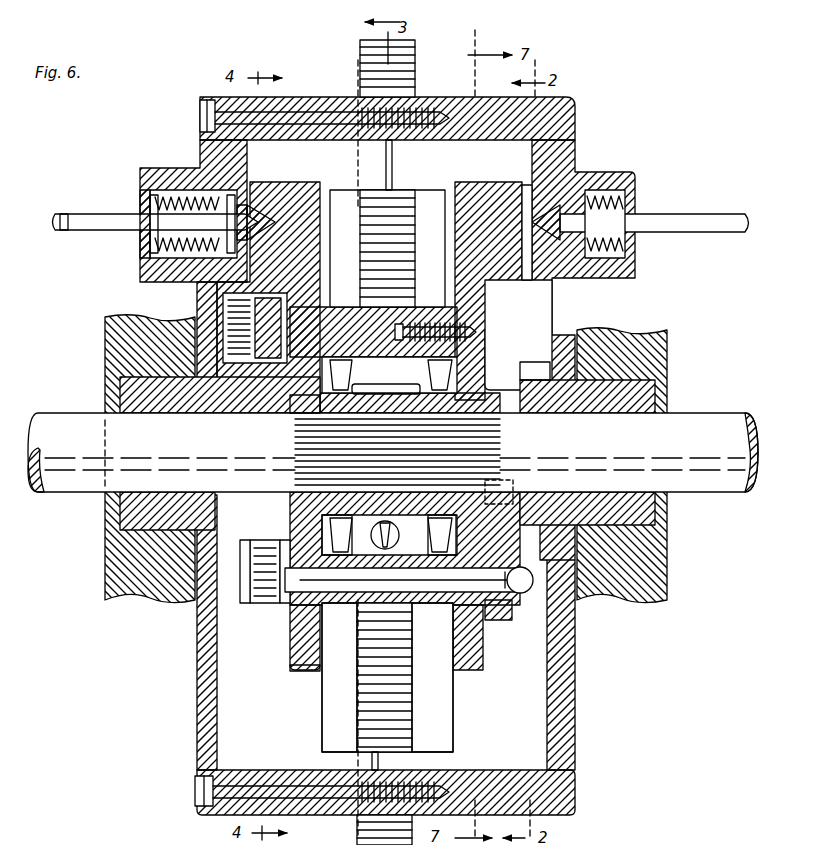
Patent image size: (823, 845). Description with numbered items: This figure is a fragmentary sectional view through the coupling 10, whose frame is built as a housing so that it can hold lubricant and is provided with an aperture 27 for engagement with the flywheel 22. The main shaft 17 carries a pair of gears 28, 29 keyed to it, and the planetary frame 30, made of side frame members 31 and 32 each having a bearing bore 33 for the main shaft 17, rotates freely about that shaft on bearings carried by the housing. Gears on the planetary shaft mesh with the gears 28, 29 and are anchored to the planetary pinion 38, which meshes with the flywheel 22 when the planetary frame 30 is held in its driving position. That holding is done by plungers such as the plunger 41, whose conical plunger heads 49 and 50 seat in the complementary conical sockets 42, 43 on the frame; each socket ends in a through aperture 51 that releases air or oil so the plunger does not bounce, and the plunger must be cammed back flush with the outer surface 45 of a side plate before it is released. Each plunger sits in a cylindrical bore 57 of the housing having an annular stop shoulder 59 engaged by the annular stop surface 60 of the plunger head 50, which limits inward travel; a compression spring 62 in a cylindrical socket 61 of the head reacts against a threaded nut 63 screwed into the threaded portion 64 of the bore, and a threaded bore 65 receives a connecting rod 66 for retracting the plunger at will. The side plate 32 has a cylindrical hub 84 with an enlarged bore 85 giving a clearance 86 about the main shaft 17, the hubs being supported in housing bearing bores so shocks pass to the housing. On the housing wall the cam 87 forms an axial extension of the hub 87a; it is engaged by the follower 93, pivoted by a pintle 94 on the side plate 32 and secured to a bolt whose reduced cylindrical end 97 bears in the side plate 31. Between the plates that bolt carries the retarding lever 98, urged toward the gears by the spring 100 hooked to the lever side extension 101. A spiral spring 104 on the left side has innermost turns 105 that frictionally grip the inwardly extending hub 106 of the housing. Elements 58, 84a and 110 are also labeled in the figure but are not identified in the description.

The coupling 10 is at (682, 393).
The main shaft 17 is at (710, 490).
The flywheel 22 is at (356, 830).
The aperture 27 is at (430, 705).
The gear 28 is at (333, 523).
The gear 29 is at (440, 533).
The planetary frame 30 is at (287, 657).
The side frame member 31 is at (300, 672).
The side frame member 32 is at (480, 667).
The bearing bore 33 is at (307, 414).
The planetary pinion 38 is at (405, 392).
The plunger 41 is at (552, 187).
The socket 42 is at (253, 213).
The socket 43 is at (512, 187).
The outer surface 45 is at (237, 187).
The plunger head 49 is at (222, 300).
The plunger head 50 is at (530, 280).
The through aperture 51 is at (372, 194).
The cylindrical bore 57 is at (630, 197).
The plunger 58 is at (535, 203).
The annular stop shoulder 59 is at (180, 283).
The annular stop surface 60 is at (217, 180).
The cylindrical socket 61 is at (150, 197).
The compression spring 62 is at (150, 272).
The threaded nut 63 is at (143, 208).
The threaded portion 64 is at (143, 192).
The threaded bore 65 is at (143, 253).
The connecting rod 66 is at (92, 231).
The cylindrical hub 84 is at (240, 403).
The flange 84a is at (250, 513).
The enlarged bore 85 is at (522, 416).
The clearance 86 is at (500, 416).
The cam 87 is at (513, 478).
The hub 87a is at (535, 372).
The follower 93 is at (504, 617).
The pintle 94 is at (525, 592).
The reduced cylindrical end 97 is at (300, 640).
The retarding lever 98 is at (350, 603).
The spring 100 is at (435, 573).
The lever side extension 101 is at (442, 627).
The spiral spring 104 is at (247, 592).
The innermost turns 105 is at (240, 593).
The inwardly extending hub 106 is at (187, 603).
The spring 110 is at (233, 190).